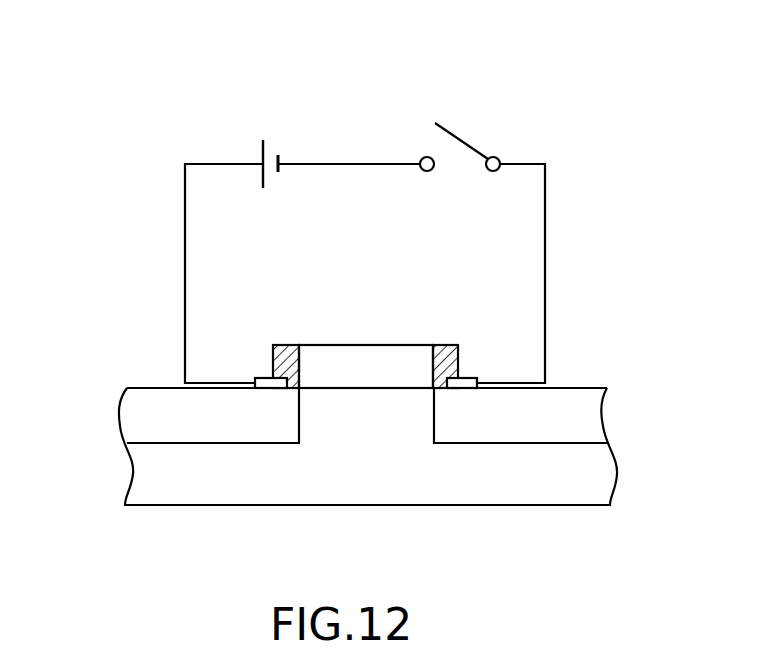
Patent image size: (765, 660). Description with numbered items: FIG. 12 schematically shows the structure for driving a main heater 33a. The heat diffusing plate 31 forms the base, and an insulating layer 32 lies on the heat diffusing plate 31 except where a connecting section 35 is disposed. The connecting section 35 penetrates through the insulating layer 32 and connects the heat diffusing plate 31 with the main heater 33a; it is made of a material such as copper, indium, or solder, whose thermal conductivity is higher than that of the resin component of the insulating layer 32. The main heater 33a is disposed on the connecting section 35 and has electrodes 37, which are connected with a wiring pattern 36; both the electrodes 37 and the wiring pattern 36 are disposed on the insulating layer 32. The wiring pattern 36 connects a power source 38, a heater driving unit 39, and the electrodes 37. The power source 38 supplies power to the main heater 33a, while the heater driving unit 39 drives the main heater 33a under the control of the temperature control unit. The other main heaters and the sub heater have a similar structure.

The heat diffusing plate 31 is at (510, 492).
The insulating layer 32 is at (155, 398).
The main heater 33a is at (368, 350).
The connecting section 35 is at (317, 448).
The wiring pattern 36 is at (263, 378).
The electrodes 37 is at (284, 344).
The power source 38 is at (282, 117).
The heater driving unit 39 is at (481, 112).